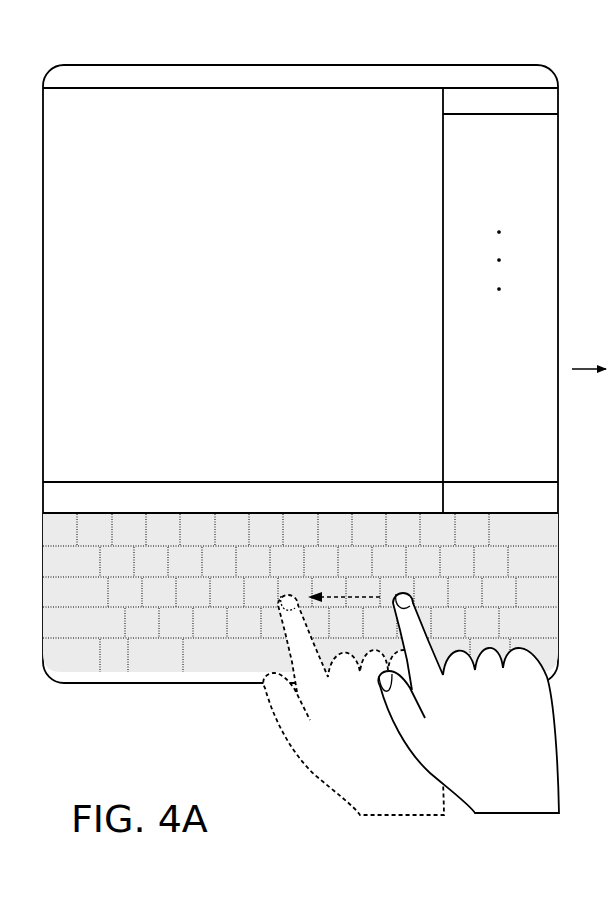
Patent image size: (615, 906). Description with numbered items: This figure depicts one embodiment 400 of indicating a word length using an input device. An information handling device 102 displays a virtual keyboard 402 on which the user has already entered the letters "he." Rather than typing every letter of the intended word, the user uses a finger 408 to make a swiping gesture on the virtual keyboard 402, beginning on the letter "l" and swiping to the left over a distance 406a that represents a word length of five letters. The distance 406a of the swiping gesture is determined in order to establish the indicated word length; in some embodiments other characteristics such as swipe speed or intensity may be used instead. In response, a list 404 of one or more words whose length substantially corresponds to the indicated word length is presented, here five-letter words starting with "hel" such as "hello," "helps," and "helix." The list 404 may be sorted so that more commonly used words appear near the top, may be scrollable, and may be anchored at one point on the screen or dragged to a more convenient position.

The embodiment of indicating a word length using an input device 400 is at (108, 53).
The information handling device 102 is at (559, 126).
The virtual keyboard 402 is at (560, 567).
The list 404 is at (444, 198).
The distance 406a is at (344, 592).
The finger 408 is at (413, 601).